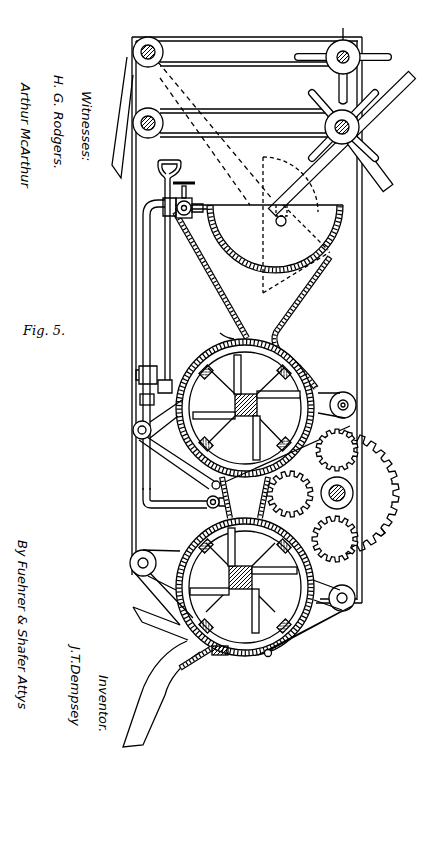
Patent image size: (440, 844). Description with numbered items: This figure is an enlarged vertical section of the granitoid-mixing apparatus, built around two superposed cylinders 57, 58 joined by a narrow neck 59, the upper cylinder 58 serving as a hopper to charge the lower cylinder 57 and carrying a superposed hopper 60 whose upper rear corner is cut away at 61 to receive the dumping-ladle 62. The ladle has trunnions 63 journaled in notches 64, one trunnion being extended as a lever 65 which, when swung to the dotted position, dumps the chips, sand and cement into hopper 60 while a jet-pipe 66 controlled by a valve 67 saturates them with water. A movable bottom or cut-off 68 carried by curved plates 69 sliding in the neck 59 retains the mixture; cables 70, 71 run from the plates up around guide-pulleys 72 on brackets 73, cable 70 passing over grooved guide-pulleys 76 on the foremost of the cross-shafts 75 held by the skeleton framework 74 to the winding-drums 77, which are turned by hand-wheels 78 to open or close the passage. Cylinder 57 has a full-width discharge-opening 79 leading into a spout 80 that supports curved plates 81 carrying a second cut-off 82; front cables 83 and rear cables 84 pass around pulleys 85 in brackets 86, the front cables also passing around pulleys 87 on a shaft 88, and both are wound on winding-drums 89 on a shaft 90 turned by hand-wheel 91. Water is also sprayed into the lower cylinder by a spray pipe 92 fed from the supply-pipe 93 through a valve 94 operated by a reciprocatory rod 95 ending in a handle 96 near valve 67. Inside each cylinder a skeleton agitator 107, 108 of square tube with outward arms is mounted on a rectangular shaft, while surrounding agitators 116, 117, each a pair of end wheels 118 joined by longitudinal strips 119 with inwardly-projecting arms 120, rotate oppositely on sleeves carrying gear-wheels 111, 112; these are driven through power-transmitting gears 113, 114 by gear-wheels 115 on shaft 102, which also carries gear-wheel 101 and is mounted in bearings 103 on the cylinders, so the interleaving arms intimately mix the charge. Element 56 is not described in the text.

The chute 56 is at (138, 608).
The lower cylinder 57 is at (189, 534).
The upper cylinder 58 is at (219, 339).
The neck 59 is at (212, 487).
The hopper 60 is at (208, 272).
The cut-away corner 61 is at (313, 322).
The dumping-ladle 62 is at (343, 220).
The trunnions 63 is at (282, 227).
The notches 64 is at (272, 216).
The lever 65 is at (411, 84).
The jet-pipe 66 is at (190, 215).
The valve 67 is at (191, 195).
The movable bottom or cut-off 68 is at (245, 497).
The curved plates 69 is at (290, 494).
The cable 70 is at (239, 42).
The cable 71 is at (358, 425).
The guide-pulleys 72 is at (357, 401).
The brackets 73 is at (327, 395).
The skeleton framework 74 is at (118, 178).
The cross-shafts 75 is at (332, 63).
The grooved guide-pulleys 76 is at (160, 60).
The winding-drums 77 is at (356, 50).
The hand-wheels 78 is at (392, 56).
The discharge-opening 79 is at (209, 658).
The spout 80 is at (147, 728).
The curved plates 81 is at (268, 658).
The movable bottom or cut-off 82 is at (226, 658).
The front cables 83 is at (132, 512).
The rear cables 84 is at (362, 578).
The pulleys 85 is at (130, 562).
The brackets 86 is at (242, 580).
The pulleys 87 is at (163, 110).
The shaft 88 is at (155, 132).
The winding-drums 89 is at (360, 125).
The shaft 90 is at (352, 131).
The hand-wheel 91 is at (378, 155).
The spray or jet pipe 92 is at (209, 506).
The supply-pipe 93 is at (139, 378).
The valve 94 is at (152, 400).
The reciprocatory rod 95 is at (170, 303).
The handle 96 is at (186, 161).
The gear-wheel 101 is at (393, 519).
The shaft 102 is at (346, 493).
The bearings 103 is at (351, 488).
The skeleton agitator 107 is at (235, 408).
The skeleton agitator 108 is at (229, 580).
The gear-wheel 111 is at (267, 370).
The gear-wheel 112 is at (243, 581).
The power-transmitting gear 113 is at (337, 450).
The power-transmitting gear 114 is at (314, 545).
The gear-wheels 115 is at (420, 541).
The agitator 116 is at (276, 366).
The agitator 117 is at (286, 641).
The end wheels 118 is at (250, 355).
The longitudinal strips 119 is at (293, 371).
The inwardly-projecting arms 120 is at (298, 379).